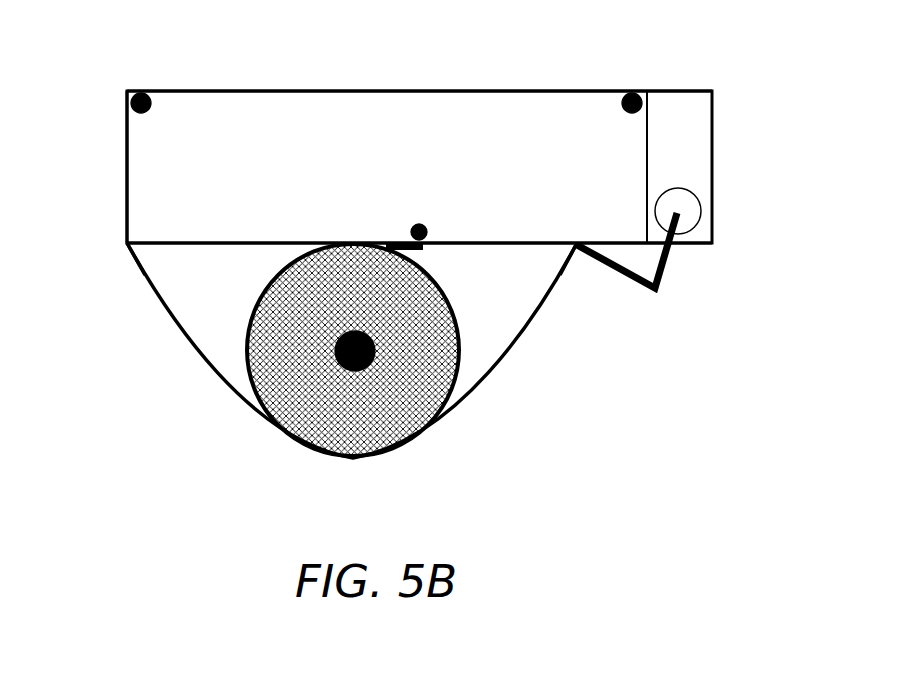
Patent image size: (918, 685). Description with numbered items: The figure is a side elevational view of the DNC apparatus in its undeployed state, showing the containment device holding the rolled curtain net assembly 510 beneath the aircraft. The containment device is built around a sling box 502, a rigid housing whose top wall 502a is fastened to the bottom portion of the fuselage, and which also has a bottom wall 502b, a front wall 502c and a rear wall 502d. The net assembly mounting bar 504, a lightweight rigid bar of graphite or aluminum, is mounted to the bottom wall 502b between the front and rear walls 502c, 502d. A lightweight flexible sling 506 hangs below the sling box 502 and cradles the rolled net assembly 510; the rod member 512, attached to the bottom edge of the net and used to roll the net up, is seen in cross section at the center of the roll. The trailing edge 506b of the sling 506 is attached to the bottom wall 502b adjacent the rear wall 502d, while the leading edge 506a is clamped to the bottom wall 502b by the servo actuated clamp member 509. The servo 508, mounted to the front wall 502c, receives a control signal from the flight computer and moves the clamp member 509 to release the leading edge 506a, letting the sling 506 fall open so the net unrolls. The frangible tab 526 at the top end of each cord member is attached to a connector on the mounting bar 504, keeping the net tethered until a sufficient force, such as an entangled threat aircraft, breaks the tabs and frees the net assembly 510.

The sling box 502 is at (284, 52).
The top wall 502a is at (408, 90).
The bottom wall 502b is at (187, 245).
The front wall 502c is at (648, 118).
The rear wall 502d is at (127, 180).
The net assembly mounting bar 504 is at (427, 234).
The sling 506 is at (239, 407).
The leading edge 506a is at (575, 246).
The trailing edge 506b is at (126, 244).
The servo 508 is at (702, 222).
The clamp member 509 is at (663, 277).
The curtain net assembly 510 is at (470, 335).
The rod member 512 is at (375, 356).
The frangible tab 526 is at (413, 253).